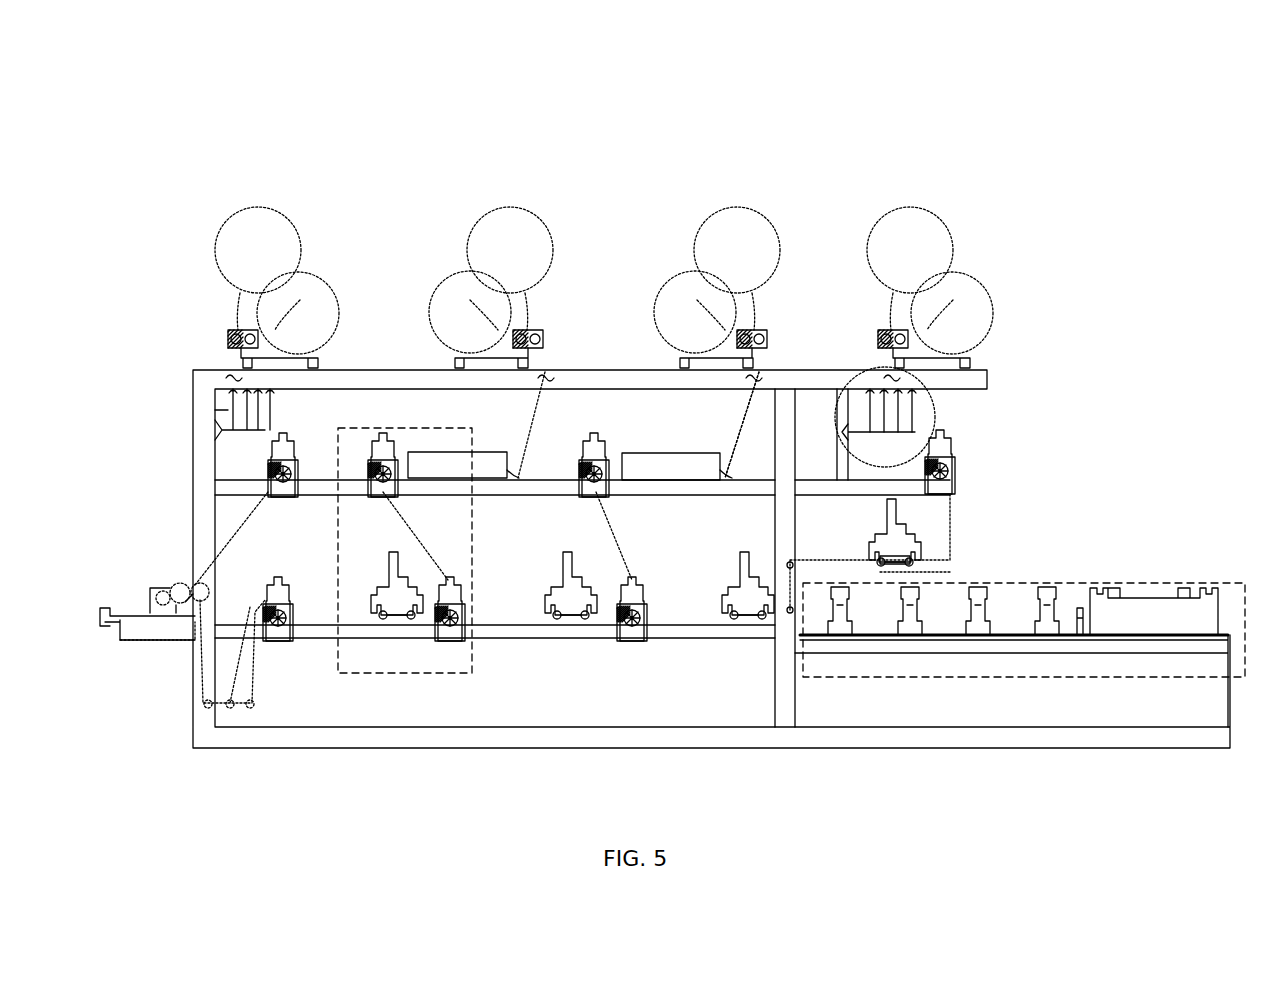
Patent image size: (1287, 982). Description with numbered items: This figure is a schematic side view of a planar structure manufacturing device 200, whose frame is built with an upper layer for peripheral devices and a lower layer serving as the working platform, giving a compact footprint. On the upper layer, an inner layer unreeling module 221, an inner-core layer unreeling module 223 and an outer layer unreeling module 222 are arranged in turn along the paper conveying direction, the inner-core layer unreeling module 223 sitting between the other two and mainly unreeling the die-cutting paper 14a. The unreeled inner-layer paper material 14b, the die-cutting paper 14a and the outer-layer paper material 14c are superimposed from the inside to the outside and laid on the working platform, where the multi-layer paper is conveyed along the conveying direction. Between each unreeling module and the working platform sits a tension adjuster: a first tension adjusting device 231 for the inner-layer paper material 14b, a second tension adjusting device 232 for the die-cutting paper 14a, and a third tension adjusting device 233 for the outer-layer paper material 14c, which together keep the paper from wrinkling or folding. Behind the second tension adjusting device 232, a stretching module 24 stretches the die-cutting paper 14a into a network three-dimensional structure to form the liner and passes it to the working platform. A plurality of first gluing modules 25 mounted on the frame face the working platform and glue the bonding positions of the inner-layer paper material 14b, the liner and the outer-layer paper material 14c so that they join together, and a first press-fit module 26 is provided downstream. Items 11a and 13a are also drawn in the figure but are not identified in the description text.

The planar structure manufacturing device 200 is at (664, 80).
The inner layer unreeling module 221 is at (266, 212).
The outer layer unreeling module 222 is at (914, 212).
The inner-core layer unreeling module 223 is at (516, 212).
The die-cutting paper 14a is at (522, 470).
The inner-layer paper material 14b is at (233, 395).
The outer-layer paper material 14c is at (758, 420).
The first tension adjusting device 231 is at (212, 410).
The second tension adjusting device 232 is at (654, 452).
The third tension adjusting device 233 is at (930, 404).
The feeding roller unit 11a is at (248, 528).
The cutting unit 13a is at (950, 500).
The stretching module 24 is at (478, 666).
The first gluing module 25 is at (552, 572).
The first press-fit module 26 is at (1066, 582).